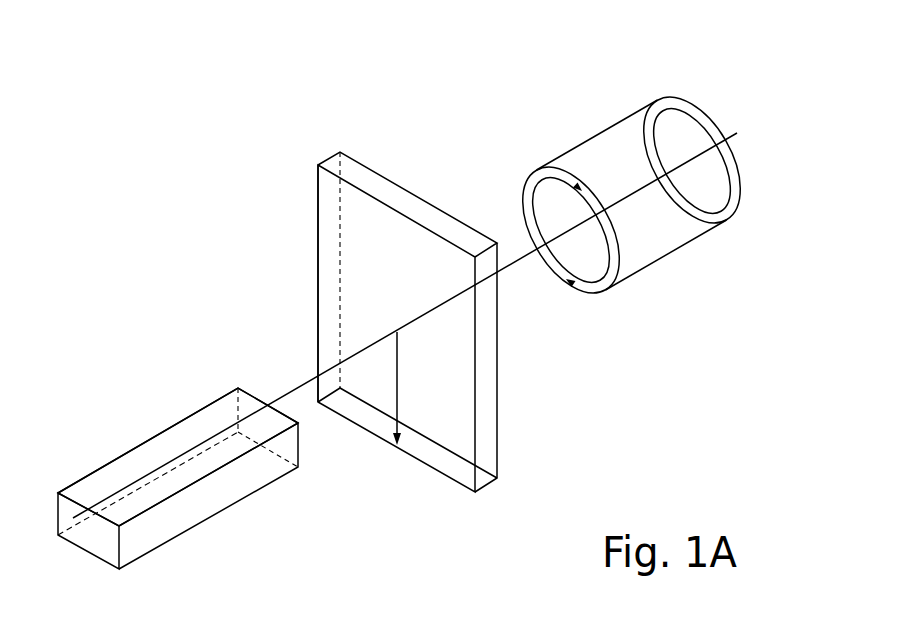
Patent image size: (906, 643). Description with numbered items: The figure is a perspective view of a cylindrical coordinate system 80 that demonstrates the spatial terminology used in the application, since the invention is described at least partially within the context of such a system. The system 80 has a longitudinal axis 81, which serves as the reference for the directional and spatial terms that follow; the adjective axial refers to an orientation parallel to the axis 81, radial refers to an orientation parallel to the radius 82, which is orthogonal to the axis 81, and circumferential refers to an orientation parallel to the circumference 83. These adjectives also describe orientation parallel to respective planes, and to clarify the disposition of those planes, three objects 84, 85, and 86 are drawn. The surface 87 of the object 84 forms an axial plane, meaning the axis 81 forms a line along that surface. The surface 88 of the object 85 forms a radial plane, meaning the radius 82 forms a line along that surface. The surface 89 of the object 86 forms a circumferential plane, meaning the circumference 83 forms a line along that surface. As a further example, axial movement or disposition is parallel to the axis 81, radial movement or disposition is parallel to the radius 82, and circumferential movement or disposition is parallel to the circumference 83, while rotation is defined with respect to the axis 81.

The cylindrical coordinate system 80 is at (270, 203).
The longitudinal axis 81 is at (598, 195).
The radius 82 is at (397, 383).
The circumference 83 is at (523, 195).
The object 84 is at (178, 507).
The object 85 is at (408, 341).
The object 86 is at (667, 271).
The surface 87 is at (140, 460).
The surface 88 is at (333, 282).
The surface 89 is at (597, 138).